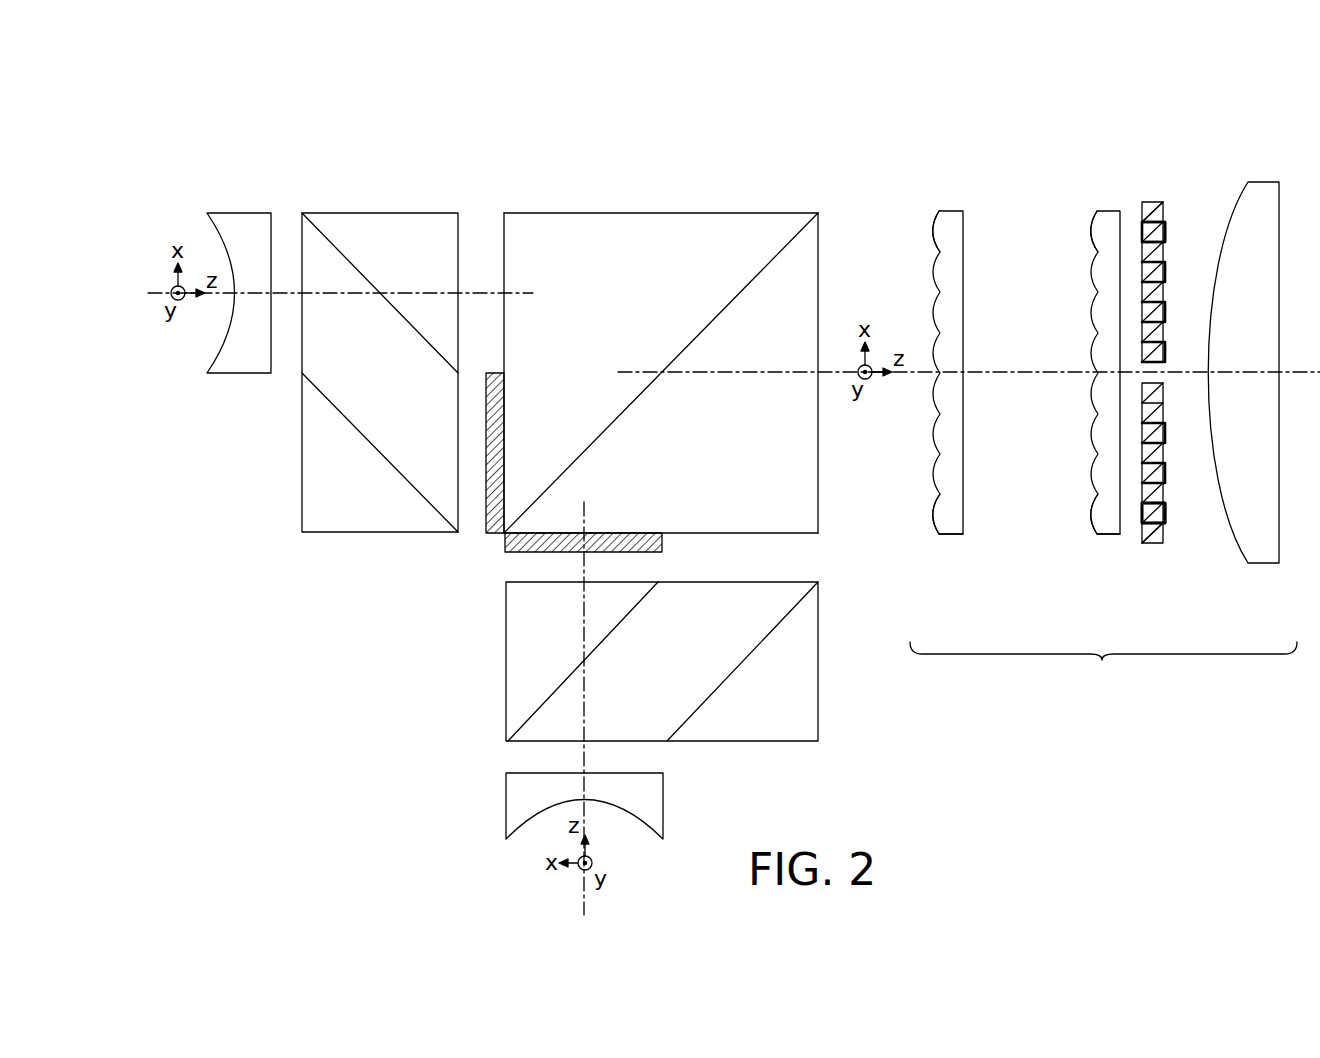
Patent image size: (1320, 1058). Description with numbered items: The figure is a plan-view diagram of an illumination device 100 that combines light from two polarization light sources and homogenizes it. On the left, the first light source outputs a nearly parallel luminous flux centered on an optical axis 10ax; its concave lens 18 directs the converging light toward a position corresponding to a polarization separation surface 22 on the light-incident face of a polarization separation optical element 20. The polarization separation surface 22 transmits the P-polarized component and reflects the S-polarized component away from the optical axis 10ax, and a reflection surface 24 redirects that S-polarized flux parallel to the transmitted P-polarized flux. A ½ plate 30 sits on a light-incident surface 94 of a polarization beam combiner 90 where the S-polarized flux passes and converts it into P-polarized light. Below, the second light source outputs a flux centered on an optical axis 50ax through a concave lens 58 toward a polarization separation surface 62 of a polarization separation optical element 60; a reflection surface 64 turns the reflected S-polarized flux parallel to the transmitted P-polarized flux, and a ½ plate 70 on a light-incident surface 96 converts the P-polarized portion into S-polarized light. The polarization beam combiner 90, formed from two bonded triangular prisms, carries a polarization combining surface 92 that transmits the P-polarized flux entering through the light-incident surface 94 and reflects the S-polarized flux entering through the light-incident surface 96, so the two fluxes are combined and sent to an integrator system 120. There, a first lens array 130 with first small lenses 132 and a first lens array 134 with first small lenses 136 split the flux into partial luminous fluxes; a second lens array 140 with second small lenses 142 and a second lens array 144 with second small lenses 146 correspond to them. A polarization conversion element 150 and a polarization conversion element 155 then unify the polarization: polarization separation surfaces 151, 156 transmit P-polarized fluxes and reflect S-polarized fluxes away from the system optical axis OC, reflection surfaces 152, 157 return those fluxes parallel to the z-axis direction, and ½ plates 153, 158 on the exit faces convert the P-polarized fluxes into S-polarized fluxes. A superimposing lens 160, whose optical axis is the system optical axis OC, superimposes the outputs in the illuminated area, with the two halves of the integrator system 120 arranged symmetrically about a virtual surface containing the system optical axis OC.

The illumination device 100 is at (1290, 70).
The optical axis 10ax is at (152, 290).
The concave lens 18 is at (250, 374).
The polarization separation optical element 20 is at (380, 362).
The polarization separation surface 22 is at (326, 232).
The reflection surface 24 is at (416, 485).
The ½ plate 30 is at (490, 537).
The optical axis 50ax is at (578, 898).
The concave lens 58 is at (664, 797).
The polarization separation optical element 60 is at (675, 661).
The polarization separation surface 62 is at (514, 722).
The reflection surface 64 is at (805, 598).
The ½ plate 70 is at (506, 548).
The polarization beam combiner 90 is at (683, 339).
The polarization combining surface 92 is at (794, 232).
The light-incident surface 94 is at (506, 224).
The light-incident surface 96 is at (818, 530).
The integrator system 120 is at (1103, 667).
The first lens array 130 is at (955, 211).
The first small lens 132 is at (934, 232).
The first lens array 134 is at (952, 535).
The first small lens 136 is at (934, 516).
The second lens array 140 is at (1104, 211).
The second small lens 142 is at (1092, 232).
The second lens array 144 is at (1102, 535).
The second small lens 146 is at (1092, 516).
The polarization conversion element 150 is at (1168, 370).
The polarization separation surface 151 is at (1145, 228).
The reflection surface 152 is at (1152, 208).
The ½ plate 153 is at (1166, 226).
The polarization conversion element 155 is at (1152, 600).
The polarization separation surface 156 is at (1147, 523).
The reflection surface 157 is at (1152, 543).
The ½ plate 158 is at (1166, 506).
The superimposing lens 160 is at (1265, 182).
The system optical axis OC is at (1294, 372).